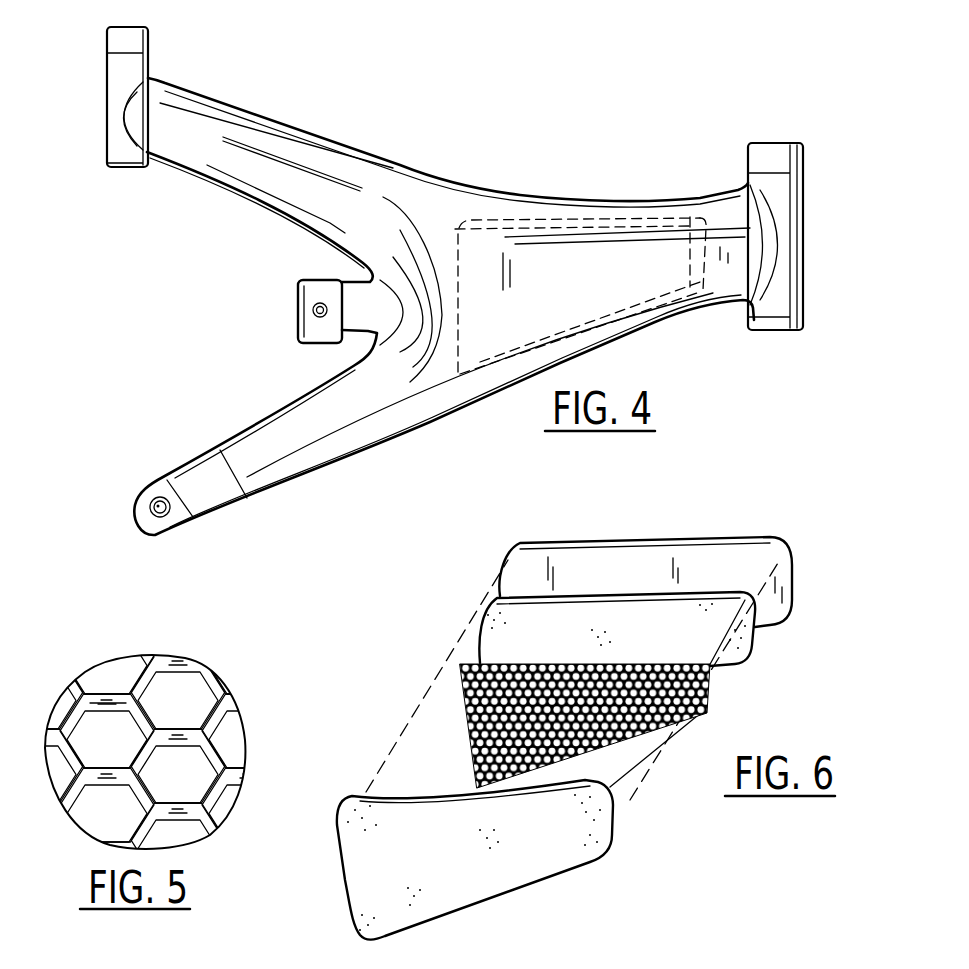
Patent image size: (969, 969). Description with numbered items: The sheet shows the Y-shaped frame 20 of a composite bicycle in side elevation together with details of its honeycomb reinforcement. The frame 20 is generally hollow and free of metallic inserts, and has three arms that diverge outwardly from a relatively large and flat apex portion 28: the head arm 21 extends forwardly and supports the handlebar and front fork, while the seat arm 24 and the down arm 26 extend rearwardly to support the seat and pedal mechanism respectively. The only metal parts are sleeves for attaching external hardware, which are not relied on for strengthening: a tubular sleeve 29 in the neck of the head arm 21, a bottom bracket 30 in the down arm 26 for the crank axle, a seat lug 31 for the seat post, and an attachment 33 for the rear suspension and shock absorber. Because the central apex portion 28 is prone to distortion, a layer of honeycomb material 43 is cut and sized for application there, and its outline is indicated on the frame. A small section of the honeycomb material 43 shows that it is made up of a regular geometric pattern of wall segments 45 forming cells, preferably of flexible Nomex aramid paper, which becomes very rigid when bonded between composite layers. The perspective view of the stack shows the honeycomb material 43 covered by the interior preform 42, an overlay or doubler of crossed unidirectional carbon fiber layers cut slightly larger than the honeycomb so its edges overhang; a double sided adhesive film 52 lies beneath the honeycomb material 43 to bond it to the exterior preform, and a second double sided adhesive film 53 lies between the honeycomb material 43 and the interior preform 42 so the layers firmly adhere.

In FIG. 4, the Y-shaped frame 20 is at (415, 122).
In FIG. 4, the head arm 21 is at (720, 210).
In FIG. 4, the seat arm 24 is at (243, 128).
In FIG. 4, the down arm 26 is at (293, 473).
In FIG. 4, the apex portion 28 is at (520, 267).
In FIG. 4, the tubular sleeve 29 is at (793, 153).
In FIG. 4, the bottom bracket 30 is at (150, 507).
In FIG. 4, the seat lug 31 is at (152, 38).
In FIG. 4, the attachment 33 is at (310, 297).
In FIG. 4, the interior preform 42 is at (617, 220).
In FIG. 6, the interior preform 42 is at (792, 587).
In FIG. 4, the honeycomb material 43 is at (470, 237).
In FIG. 5, the honeycomb material 43 is at (107, 793).
In FIG. 6, the honeycomb material 43 is at (697, 720).
In FIG. 5, the wall segments 45 is at (113, 696).
In FIG. 4, the double sided adhesive film 52 is at (490, 228).
In FIG. 6, the double sided adhesive film 52 is at (543, 867).
In FIG. 4, the second double sided adhesive film 53 is at (572, 168).
In FIG. 6, the second double sided adhesive film 53 is at (753, 650).